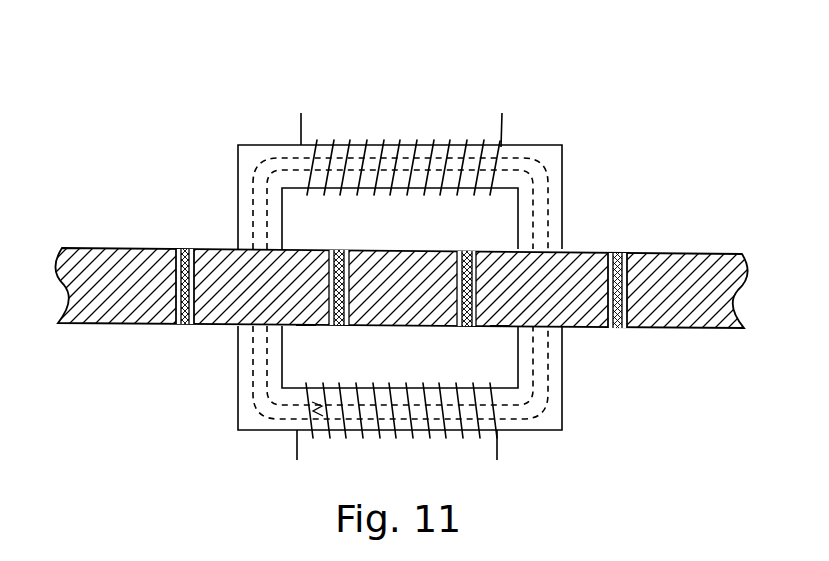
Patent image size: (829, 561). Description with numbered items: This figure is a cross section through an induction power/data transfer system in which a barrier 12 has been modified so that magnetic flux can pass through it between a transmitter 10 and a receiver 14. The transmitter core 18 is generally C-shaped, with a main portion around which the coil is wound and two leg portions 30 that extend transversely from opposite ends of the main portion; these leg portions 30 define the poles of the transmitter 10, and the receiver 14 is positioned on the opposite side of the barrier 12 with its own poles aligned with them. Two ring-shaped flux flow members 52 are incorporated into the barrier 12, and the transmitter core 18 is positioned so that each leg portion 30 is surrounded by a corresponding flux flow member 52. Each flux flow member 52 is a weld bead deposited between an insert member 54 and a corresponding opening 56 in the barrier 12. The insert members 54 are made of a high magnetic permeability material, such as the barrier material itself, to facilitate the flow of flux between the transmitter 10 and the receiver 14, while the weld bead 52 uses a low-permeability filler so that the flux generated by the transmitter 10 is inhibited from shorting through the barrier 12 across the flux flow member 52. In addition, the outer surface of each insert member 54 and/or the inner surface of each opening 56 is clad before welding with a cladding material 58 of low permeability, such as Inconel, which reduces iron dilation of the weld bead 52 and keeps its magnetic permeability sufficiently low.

The transmitter 10 is at (577, 137).
The barrier 12 is at (708, 253).
The receiver 14 is at (580, 410).
The transmitter core 18 is at (262, 144).
The leg portions 30 is at (238, 178).
The flux flow member 52 is at (186, 326).
The insert member 54 is at (305, 328).
The opening 56 is at (340, 262).
The cladding material 58 is at (176, 249).